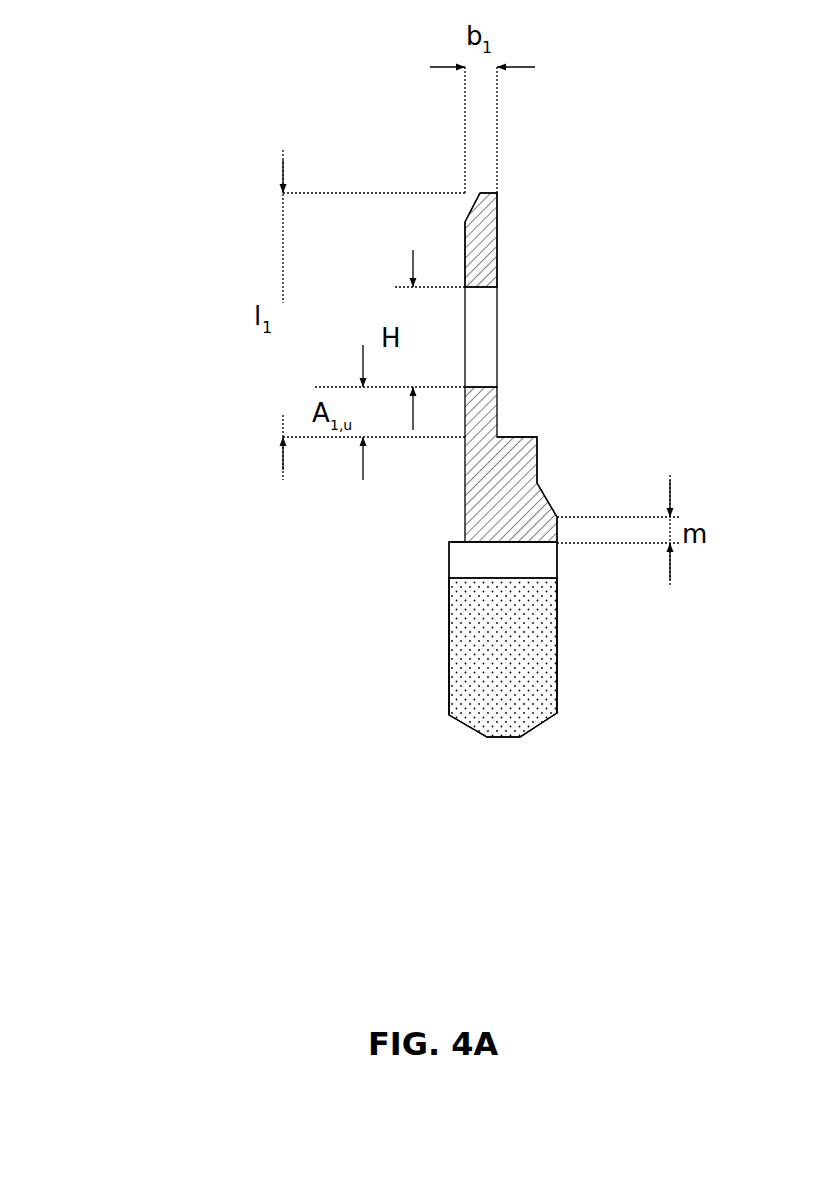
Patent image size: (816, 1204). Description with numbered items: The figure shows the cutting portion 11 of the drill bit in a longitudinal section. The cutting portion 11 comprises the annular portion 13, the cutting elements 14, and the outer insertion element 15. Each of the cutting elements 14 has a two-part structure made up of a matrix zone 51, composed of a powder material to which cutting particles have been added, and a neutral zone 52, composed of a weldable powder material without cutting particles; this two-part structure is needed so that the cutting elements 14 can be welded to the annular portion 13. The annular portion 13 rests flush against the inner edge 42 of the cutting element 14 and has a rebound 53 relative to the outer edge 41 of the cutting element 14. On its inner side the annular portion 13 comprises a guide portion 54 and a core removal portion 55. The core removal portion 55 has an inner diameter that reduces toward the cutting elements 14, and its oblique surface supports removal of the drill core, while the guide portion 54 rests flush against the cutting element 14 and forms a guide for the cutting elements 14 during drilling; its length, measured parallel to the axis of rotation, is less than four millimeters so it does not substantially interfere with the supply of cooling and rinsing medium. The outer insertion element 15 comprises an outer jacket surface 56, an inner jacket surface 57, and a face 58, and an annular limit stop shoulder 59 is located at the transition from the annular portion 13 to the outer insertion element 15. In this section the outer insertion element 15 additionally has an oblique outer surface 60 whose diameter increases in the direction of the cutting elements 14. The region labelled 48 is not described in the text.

The cutting portion 11 is at (178, 432).
The annular portion 13 is at (493, 467).
The cutting elements 14 is at (501, 755).
The outer insertion element 15 is at (482, 258).
The outer edge 41 is at (447, 643).
The inner edge 42 is at (560, 648).
The recess 48 is at (497, 312).
The matrix zone 51 is at (503, 657).
The neutral zone 52 is at (462, 568).
The rebound 53 is at (455, 536).
The guide portion 54 is at (560, 528).
The core removal portion 55 is at (548, 495).
The outer jacket surface 56 is at (462, 275).
The inner jacket surface 57 is at (499, 208).
The face 58 is at (492, 190).
The annular limit stop shoulder 59 is at (521, 434).
The oblique outer surface 60 is at (470, 205).